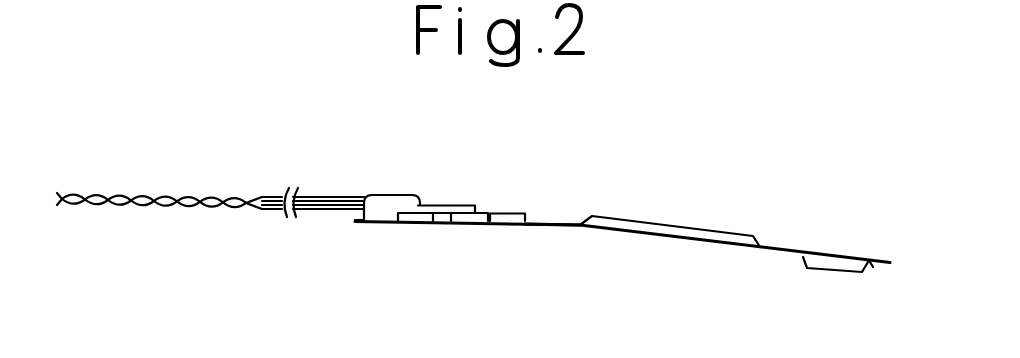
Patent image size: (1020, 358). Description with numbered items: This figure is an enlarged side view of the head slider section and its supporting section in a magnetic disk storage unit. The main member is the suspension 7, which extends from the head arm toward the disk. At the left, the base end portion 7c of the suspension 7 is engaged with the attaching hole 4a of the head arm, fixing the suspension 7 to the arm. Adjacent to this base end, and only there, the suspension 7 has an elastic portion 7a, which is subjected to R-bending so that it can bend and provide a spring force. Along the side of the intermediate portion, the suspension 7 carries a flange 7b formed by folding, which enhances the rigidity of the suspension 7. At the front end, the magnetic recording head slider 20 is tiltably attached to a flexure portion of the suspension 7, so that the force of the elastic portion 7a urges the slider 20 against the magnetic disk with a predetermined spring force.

The suspension 7 is at (838, 232).
The elastic portion 7a is at (553, 223).
The flange 7b is at (657, 227).
The base end portion 7c is at (484, 218).
The attaching hole 4a is at (440, 218).
The magnetic recording head slider 20 is at (802, 269).